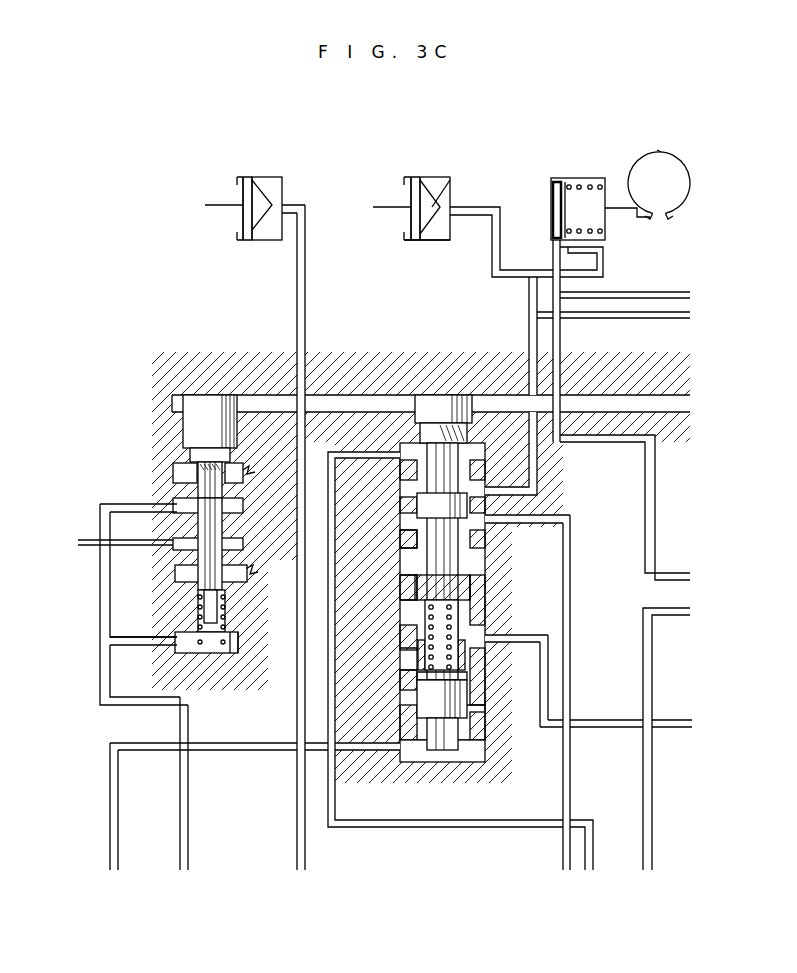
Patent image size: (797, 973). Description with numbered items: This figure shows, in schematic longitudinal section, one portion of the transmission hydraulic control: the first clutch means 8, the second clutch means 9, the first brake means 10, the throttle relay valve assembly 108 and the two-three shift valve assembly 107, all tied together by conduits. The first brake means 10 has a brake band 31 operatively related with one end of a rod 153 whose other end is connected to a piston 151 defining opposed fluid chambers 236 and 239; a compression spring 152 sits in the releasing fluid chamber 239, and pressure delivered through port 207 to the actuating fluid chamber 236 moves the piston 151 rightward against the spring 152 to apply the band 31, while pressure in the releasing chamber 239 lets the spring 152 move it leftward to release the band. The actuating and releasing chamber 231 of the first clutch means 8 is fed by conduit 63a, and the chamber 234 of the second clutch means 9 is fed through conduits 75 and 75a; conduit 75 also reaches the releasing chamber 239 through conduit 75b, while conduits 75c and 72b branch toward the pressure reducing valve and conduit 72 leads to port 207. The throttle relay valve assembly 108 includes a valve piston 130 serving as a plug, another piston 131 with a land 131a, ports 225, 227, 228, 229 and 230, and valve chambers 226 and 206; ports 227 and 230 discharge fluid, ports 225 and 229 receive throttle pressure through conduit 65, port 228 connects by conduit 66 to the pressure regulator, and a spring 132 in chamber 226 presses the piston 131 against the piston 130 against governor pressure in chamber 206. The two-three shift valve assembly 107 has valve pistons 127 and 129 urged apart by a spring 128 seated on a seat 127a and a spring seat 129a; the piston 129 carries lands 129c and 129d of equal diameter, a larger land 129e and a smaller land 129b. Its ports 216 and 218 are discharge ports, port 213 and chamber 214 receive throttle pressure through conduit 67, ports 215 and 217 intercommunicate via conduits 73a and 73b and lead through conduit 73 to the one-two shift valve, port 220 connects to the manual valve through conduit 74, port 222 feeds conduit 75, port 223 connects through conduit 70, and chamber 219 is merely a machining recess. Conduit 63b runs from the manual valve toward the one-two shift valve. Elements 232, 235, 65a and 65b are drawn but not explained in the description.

The first clutch means 8 is at (249, 175).
The actuating and releasing chamber 231 is at (270, 185).
The valve seat 232 is at (252, 215).
The conduit 63a is at (306, 275).
The throttle relay valve assembly 108 is at (172, 350).
The valve piston 130 is at (213, 400).
The valve chamber 206 is at (345, 395).
The port 223 is at (406, 450).
The land 129e is at (445, 405).
The second clutch means 9 is at (420, 175).
The chamber 234 is at (440, 185).
The valve seat 235 is at (445, 205).
The 2-3 shift valve assembly 107 is at (415, 310).
The conduit 75a is at (492, 238).
The port 207 is at (553, 245).
The conduit 75 is at (527, 290).
The actuating fluid chamber 236 is at (551, 195).
The piston 151 is at (559, 180).
The compression spring 152 is at (577, 180).
The releasing fluid chamber 239 is at (598, 185).
The first brake means 10 is at (657, 150).
The brake band 31 is at (680, 160).
The rod 153 is at (638, 218).
The conduit 75b is at (605, 270).
The conduit 72b is at (675, 292).
The conduit 75c is at (632, 318).
The land 129d is at (470, 432).
The port 222 is at (495, 491).
The port 220 is at (500, 520).
The conduit 72 is at (655, 510).
The port 229 is at (175, 505).
The port 230 is at (247, 472).
The land 131a is at (225, 480).
The piston 131 is at (218, 522).
The conduit 66 is at (80, 546).
The port 228 is at (175, 546).
The port 227 is at (249, 576).
The conduit 65b is at (100, 590).
The valve piston 129 is at (432, 470).
The land 129c is at (420, 505).
The valve chamber 219 is at (405, 540).
The port 218 is at (410, 585).
The spring seat 129a is at (418, 598).
The spring 128 is at (428, 630).
The port 216 is at (405, 658).
The seat 127a is at (418, 684).
The land 129b is at (470, 582).
The port 217 is at (495, 638).
The conduit 73a is at (524, 645).
The conduit 73b is at (548, 706).
The conduit 65a is at (110, 642).
The port 225 is at (175, 645).
The spring 132 is at (213, 653).
The valve chamber 226 is at (239, 650).
The conduit 65 is at (188, 715).
The port 215 is at (485, 712).
The port 213 is at (392, 748).
The chamber 214 is at (405, 765).
The valve piston 127 is at (440, 755).
The conduit 73 is at (605, 730).
The conduit 63b is at (652, 625).
The conduit 67 is at (118, 810).
The conduit 74 is at (563, 853).
The conduit 70 is at (593, 850).